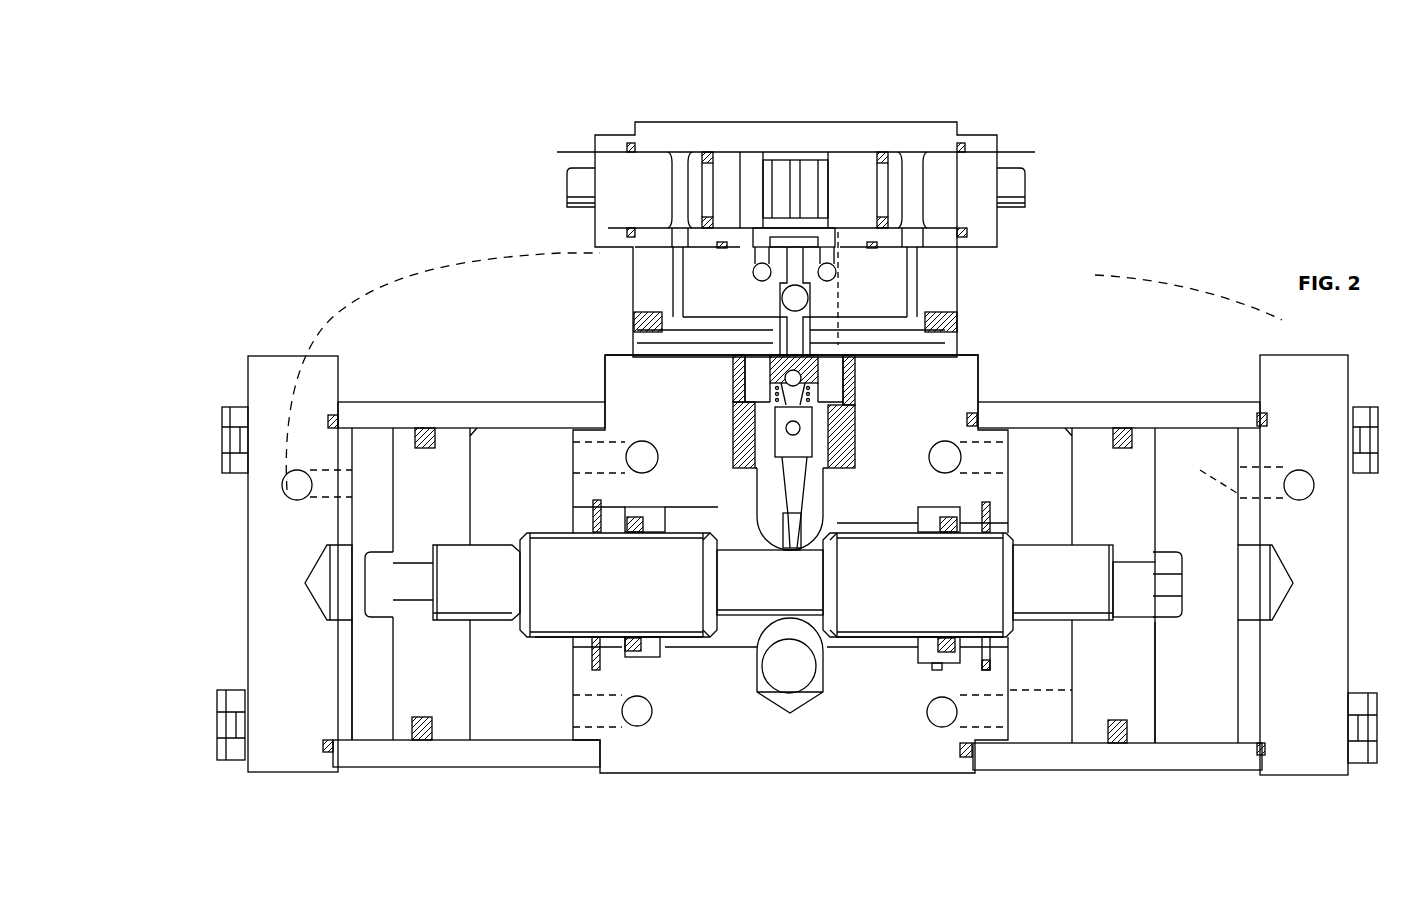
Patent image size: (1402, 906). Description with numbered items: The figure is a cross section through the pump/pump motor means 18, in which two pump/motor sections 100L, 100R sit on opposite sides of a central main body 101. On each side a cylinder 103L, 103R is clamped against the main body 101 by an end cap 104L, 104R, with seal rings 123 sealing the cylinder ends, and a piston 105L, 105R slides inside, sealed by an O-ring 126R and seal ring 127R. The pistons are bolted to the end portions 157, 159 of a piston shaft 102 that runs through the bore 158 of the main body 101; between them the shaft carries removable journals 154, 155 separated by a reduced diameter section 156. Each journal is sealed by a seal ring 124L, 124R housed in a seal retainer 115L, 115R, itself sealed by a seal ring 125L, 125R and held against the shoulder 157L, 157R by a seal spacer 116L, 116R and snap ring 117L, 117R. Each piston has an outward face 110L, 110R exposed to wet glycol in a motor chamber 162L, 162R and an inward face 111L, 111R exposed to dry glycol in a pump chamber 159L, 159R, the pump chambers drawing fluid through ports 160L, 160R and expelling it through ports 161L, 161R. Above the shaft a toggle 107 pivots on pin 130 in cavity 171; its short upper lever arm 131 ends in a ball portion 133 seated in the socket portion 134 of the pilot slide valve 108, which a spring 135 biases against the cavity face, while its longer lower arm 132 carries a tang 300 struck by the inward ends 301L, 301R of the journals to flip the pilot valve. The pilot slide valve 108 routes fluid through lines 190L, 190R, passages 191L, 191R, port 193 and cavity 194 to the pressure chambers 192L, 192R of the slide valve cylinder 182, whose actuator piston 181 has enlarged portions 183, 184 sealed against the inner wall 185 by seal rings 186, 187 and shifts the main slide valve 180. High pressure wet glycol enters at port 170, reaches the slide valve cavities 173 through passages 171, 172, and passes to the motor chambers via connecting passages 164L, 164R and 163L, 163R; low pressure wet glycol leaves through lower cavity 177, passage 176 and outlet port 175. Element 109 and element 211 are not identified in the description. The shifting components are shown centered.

The pump/pump motor means 18 is at (1190, 210).
The left pump/motor section 100L is at (420, 355).
The right pump/motor section 100R is at (1141, 335).
The central main body 101 is at (908, 775).
The piston shaft 102 is at (490, 623).
The left cylinder 103L is at (362, 402).
The right cylinder 103R is at (1220, 412).
The left end cap 104L is at (252, 362).
The cylinder end cap 104R is at (1373, 343).
The left piston 105L is at (448, 437).
The right piston 105R is at (1092, 440).
The toggle 107 is at (735, 440).
The pilot slide valve 108 is at (733, 368).
The pilot valve housing 109 is at (997, 268).
The outwardly directed face 110L is at (388, 672).
The outwardly directed face 110R is at (1155, 683).
The oppositely positioned face 111L is at (458, 702).
The oppositely positioned face 111R is at (1070, 713).
The seal retainer 115L is at (650, 530).
The seal retainer 115R is at (918, 585).
The seal spacer 116L is at (635, 532).
The seal spacer 116R is at (973, 663).
The snap ring 117L is at (593, 507).
The snap ring 117R is at (990, 660).
The seal rings 123 is at (965, 762).
The seal ring 124L is at (625, 512).
The seal ring 124R is at (950, 517).
The seal ring 125L is at (733, 469).
The seal ring 125R is at (935, 505).
The O-ring 126R is at (1133, 440).
The seal ring 127R is at (1127, 427).
The pin 130 is at (783, 470).
The lever arm 131 is at (788, 407).
The lever arm 132 is at (784, 502).
The ball portion 133 is at (814, 388).
The open socket portion 134 is at (837, 353).
The biasing spring 135 is at (790, 396).
The pushrod journal 154 is at (858, 640).
The pushrod journal 155 is at (547, 637).
The reduced diameter section 156 is at (740, 620).
The end portion 157 is at (453, 557).
The shoulder 157L is at (660, 660).
The shoulder 157R is at (910, 653).
The bore 158 is at (820, 512).
The end portion 159 is at (1048, 550).
The left pump chamber 159L is at (510, 755).
The right pump chamber 159R is at (1052, 725).
The left lower port 160L is at (637, 727).
The port 160R is at (937, 713).
The left upper port 161L is at (642, 441).
The port 161R is at (947, 441).
The motor chamber 162L is at (373, 717).
The motor chamber 162R is at (1205, 722).
The left end port 163L is at (283, 487).
The connecting passage 163R is at (1300, 470).
The left pilot ball 164L is at (752, 272).
The connecting passage 164R is at (836, 272).
The port 170 is at (787, 677).
The passage 171 is at (825, 443).
The passage 172 is at (838, 305).
The cavity 173 is at (733, 148).
The port 175 is at (782, 297).
The passage 176 is at (995, 255).
The lower cavity 177 is at (795, 200).
The main slide valve 180 is at (793, 165).
The actuator piston 181 is at (740, 165).
The slide valve cylinder 182 is at (882, 155).
The enlarged portion 183 is at (706, 160).
The enlarged portion 184 is at (822, 165).
The inner wall 185 is at (802, 162).
The seal ring 186 is at (708, 190).
The seal ring 187 is at (885, 218).
The line 190L is at (647, 340).
The port 190R is at (957, 330).
The port 191L is at (665, 243).
The passage 191R is at (913, 297).
The pressure chamber 192L is at (675, 208).
The pressure chamber 192R is at (915, 170).
The port 193 is at (790, 338).
The cavity 194 is at (779, 386).
The chamber 211 is at (1068, 697).
The tang 300 is at (778, 553).
The left chamfer 301L is at (728, 607).
The inward end 301R is at (820, 552).